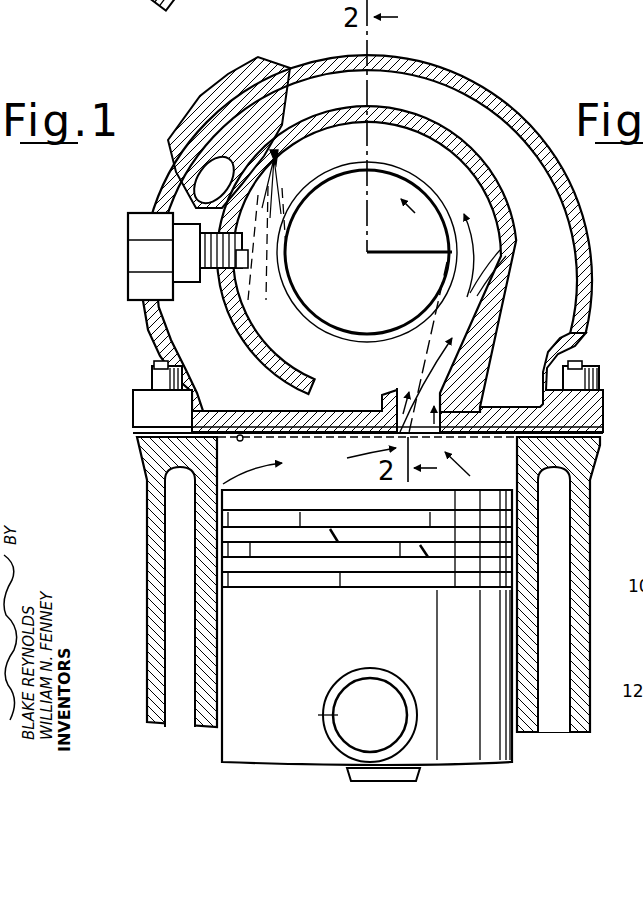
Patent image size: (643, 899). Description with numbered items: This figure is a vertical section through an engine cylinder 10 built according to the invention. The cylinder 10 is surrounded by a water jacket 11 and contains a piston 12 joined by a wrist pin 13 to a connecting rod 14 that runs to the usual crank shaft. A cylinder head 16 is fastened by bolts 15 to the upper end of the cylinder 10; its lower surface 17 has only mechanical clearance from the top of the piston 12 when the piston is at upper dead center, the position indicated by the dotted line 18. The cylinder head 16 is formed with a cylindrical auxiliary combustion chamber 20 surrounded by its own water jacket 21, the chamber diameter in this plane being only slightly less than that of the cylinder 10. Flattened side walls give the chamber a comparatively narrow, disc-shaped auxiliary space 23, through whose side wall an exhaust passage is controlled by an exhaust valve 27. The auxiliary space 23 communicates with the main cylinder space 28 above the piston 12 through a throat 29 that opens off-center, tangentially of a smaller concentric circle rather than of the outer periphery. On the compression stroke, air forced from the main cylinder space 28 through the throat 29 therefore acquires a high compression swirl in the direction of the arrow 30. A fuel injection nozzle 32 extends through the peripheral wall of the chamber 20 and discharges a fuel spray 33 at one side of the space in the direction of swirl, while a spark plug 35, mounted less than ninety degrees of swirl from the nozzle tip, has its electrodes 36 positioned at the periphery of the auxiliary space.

The engine cylinder 10 is at (202, 572).
The water jacket 11 is at (150, 502).
The piston 12 is at (240, 632).
The wrist pin 13 is at (335, 722).
The connecting rod 14 is at (345, 775).
The bolts 15 is at (154, 366).
The cylinder head 16 is at (135, 405).
The lower surface 17 is at (244, 434).
The dotted line 18 is at (318, 439).
The auxiliary combustion chamber 20 is at (440, 130).
The water jacket 21 is at (424, 68).
The disc-shaped auxiliary space 23 is at (350, 366).
The exhaust valve 27 is at (410, 180).
The main cylinder space 28 is at (498, 466).
The throat 29 is at (390, 383).
The arrow 30 is at (430, 232).
The fuel injection nozzle 32 is at (200, 85).
The fuel spray 33 is at (287, 203).
The spark plug 35 is at (130, 240).
The electrodes 36 is at (246, 258).